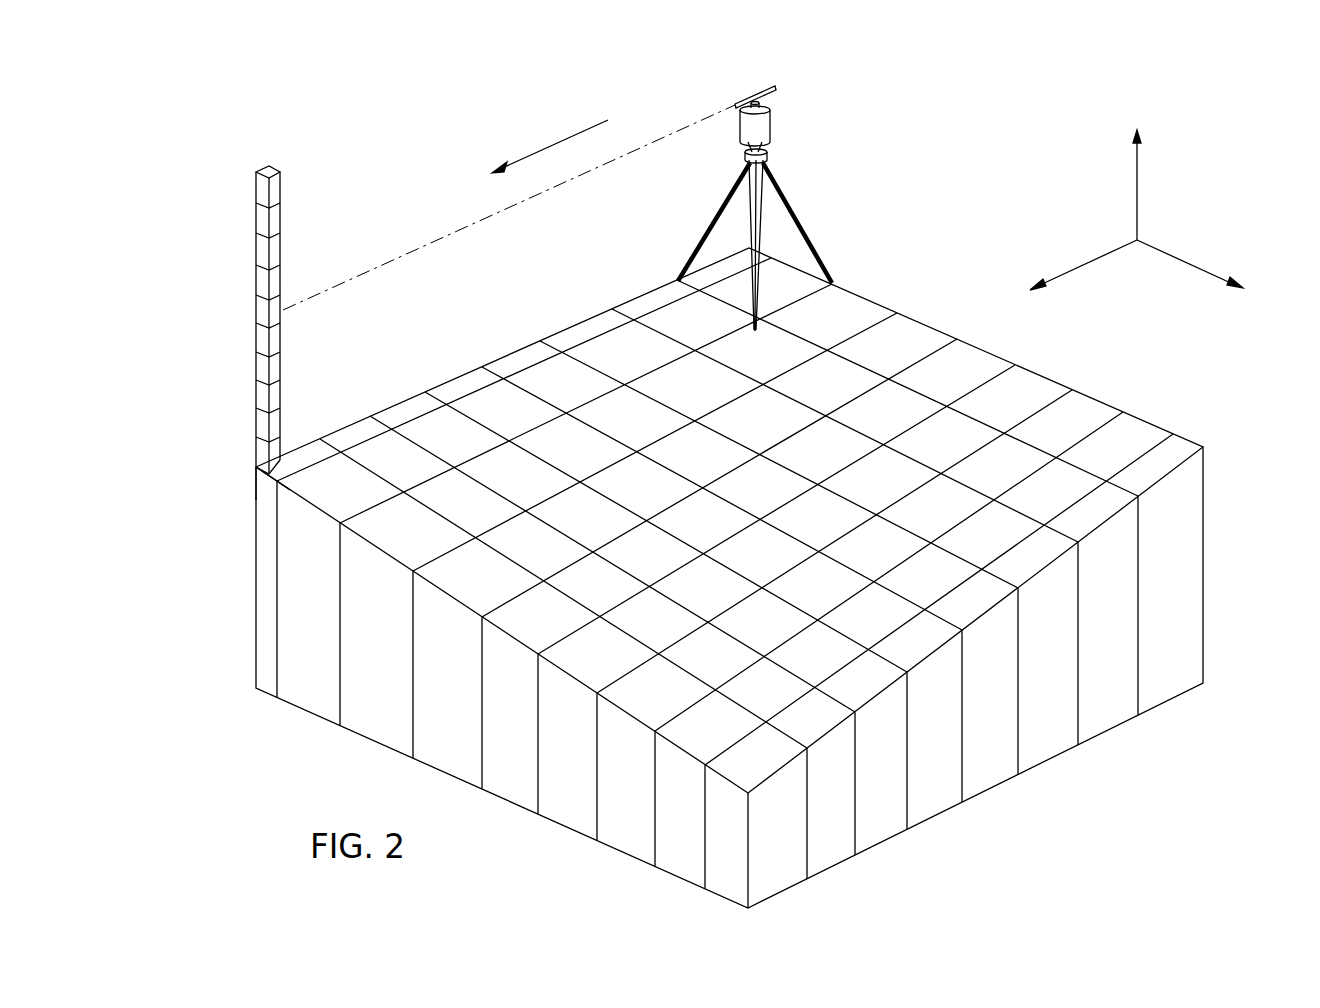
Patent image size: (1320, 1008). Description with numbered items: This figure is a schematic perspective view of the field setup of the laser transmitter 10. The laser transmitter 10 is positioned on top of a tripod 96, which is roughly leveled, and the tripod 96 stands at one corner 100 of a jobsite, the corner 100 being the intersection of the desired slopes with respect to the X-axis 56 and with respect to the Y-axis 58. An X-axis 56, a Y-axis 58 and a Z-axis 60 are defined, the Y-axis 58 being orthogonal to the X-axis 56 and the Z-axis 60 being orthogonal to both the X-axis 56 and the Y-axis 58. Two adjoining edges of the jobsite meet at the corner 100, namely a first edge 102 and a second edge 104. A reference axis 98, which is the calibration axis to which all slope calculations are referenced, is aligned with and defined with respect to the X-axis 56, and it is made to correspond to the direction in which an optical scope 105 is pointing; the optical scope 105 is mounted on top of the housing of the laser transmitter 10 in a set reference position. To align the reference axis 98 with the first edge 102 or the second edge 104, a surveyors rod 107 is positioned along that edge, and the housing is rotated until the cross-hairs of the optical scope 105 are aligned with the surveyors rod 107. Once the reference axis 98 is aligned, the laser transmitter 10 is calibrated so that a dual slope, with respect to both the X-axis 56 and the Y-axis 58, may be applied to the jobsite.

The laser transmitter 10 is at (768, 132).
The optical scope 105 is at (777, 92).
The tripod 96 is at (796, 207).
The corner 100 is at (744, 252).
The reference axis 98 is at (557, 142).
The surveyors rod 107 is at (278, 186).
The first edge 102 is at (255, 467).
The second edge 104 is at (1185, 449).
The X-axis 56 is at (1092, 257).
The Y-axis 58 is at (1192, 267).
The Z-axis 60 is at (1138, 185).